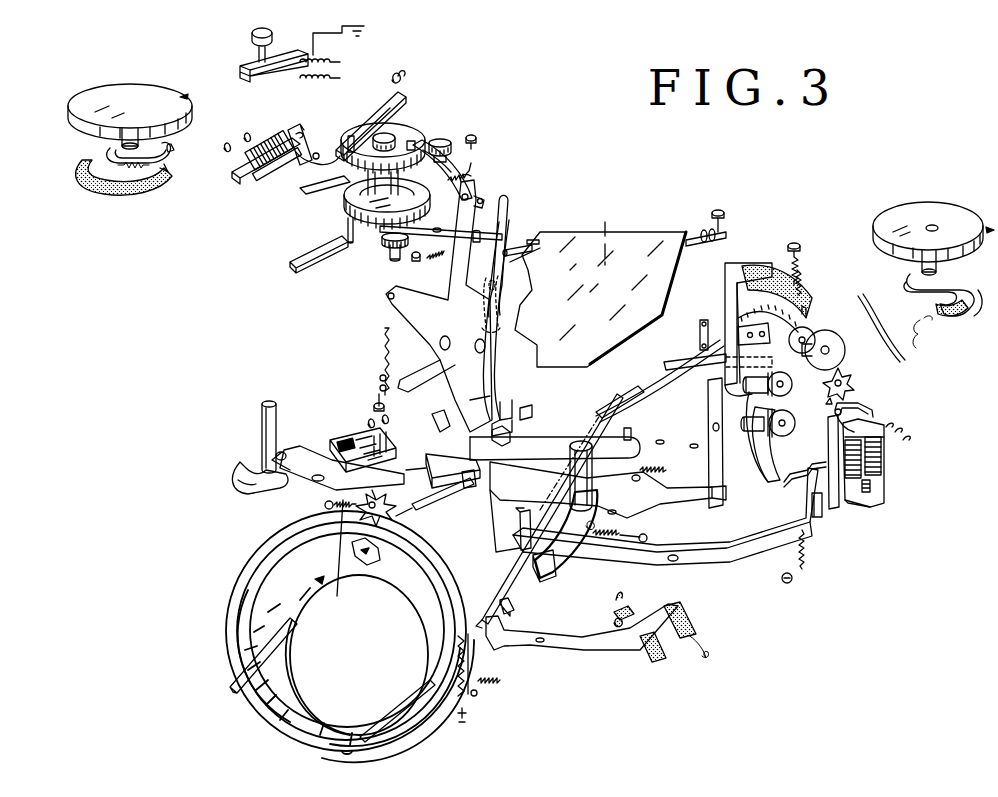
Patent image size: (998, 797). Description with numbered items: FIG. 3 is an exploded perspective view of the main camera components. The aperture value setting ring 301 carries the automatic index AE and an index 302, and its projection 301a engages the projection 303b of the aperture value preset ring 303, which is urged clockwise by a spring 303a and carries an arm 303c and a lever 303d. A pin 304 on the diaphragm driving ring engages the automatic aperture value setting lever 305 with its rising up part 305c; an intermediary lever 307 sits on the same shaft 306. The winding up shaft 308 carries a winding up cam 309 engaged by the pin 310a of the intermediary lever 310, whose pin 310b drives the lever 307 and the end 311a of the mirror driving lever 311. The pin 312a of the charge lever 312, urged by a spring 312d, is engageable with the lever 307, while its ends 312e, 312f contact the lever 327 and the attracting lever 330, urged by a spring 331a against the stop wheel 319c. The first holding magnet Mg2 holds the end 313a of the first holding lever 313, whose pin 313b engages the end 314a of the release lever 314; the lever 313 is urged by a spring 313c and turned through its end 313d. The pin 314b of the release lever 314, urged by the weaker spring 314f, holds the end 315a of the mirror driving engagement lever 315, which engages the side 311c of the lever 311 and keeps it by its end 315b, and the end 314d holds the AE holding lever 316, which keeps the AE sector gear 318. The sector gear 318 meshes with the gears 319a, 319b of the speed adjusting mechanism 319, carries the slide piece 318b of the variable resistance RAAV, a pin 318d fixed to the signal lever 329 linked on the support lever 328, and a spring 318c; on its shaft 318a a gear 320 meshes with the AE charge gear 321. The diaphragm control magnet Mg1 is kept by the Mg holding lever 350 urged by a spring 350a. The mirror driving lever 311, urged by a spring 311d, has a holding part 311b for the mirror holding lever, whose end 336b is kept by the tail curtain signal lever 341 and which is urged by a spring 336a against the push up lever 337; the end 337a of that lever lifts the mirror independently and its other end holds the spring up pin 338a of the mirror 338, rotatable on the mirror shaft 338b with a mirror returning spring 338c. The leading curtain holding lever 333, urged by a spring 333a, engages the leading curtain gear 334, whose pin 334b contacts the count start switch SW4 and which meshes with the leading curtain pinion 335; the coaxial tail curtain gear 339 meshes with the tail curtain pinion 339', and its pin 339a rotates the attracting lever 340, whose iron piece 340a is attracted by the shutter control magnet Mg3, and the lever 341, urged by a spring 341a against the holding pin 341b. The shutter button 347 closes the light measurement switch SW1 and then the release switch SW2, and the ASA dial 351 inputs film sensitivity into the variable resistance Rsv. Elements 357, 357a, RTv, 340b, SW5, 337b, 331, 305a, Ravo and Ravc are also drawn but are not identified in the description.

The film speed dial 357 is at (90, 96).
The dial contact arm 357a is at (172, 160).
The film speed variable resistor RTv is at (102, 190).
The shutter button 347 is at (250, 35).
The light measurement switch SW1 is at (333, 49).
The release switch SW2 is at (333, 80).
The iron piece 340a is at (290, 136).
The shutter control magnet Mg3 is at (256, 186).
The armature link 340b is at (330, 176).
The pin 339a is at (348, 195).
The switch 5 SW5 is at (296, 260).
The count start switch SW4 is at (396, 90).
The leading curtain gear 334 is at (408, 133).
The pin 334b is at (385, 126).
The leading curtain pinion 335 is at (447, 137).
The leading curtain holding lever 333 is at (462, 186).
The spring 333a is at (475, 160).
The attracting lever 340 is at (350, 212).
The tail curtain gear 339 is at (384, 243).
The tail curtain pinion 339' is at (367, 250).
The tail curtain signal lever 341 is at (430, 228).
The spring 341a is at (430, 262).
The holding pin 341b is at (486, 204).
The end of mirror holding lever 336b is at (510, 224).
The mirror driving lever 311 is at (442, 326).
The holding part 311b is at (396, 288).
The spring 311d is at (384, 340).
The end of mirror driving lever 311a is at (380, 384).
The end of push up lever 337a is at (406, 380).
The push up lever 337 is at (498, 366).
The side of mirror driving lever 311c is at (482, 396).
The latch tab 337b is at (510, 412).
The end of mirror driving engagement lever 315b is at (541, 404).
The rising up part 305c is at (506, 432).
The pin 310b is at (446, 426).
The spring 336a is at (512, 296).
The spring up pin 338a is at (534, 256).
The mirror shaft 338b is at (702, 246).
The mirror returning spring 338c is at (722, 232).
The mirror 338 is at (670, 292).
The support lever 328 is at (700, 326).
The signal lever 329 is at (656, 372).
The arm 303c is at (616, 396).
The pin 318d is at (700, 368).
The pin 312a is at (634, 428).
The AE sector gear 318 is at (732, 372).
The AE holding lever 316 is at (708, 426).
The slide piece 318b is at (730, 284).
The variable resistance RAAV is at (772, 262).
The spring 318c is at (804, 270).
The gear 319a is at (815, 334).
The gear 319b is at (846, 349).
The speed adjusting mechanism 319 is at (884, 328).
The stop wheel 319c is at (852, 378).
The gear 320 is at (792, 388).
The AE charge gear 321 is at (790, 432).
The attracting lever 330 is at (874, 404).
The spring 331a is at (872, 414).
The electromagnet coil 331 is at (890, 428).
The diaphragm control magnet Mg1 is at (876, 506).
The charge lever 312 is at (766, 484).
The shaft 318a is at (758, 468).
The end of charge lever 312e is at (804, 480).
The lever 327 is at (810, 505).
The stepped end 312f is at (834, 508).
The ASA dial 351 is at (916, 204).
The variable resistance Rsv is at (958, 324).
The shaft 306 is at (592, 478).
The intermediary lever 307 is at (572, 443).
The automatic aperture value setting lever 305 is at (562, 566).
The release lever 314 is at (648, 506).
The end of release lever 314d is at (710, 500).
The spring 312d is at (664, 466).
The Mg holding lever 350 is at (728, 552).
The spring 350a is at (792, 566).
The spring 305a is at (650, 539).
The winding up shaft 308 is at (276, 418).
The winding up cam 309 is at (246, 492).
The intermediary lever 310 is at (306, 486).
The pin 310a is at (288, 458).
The first holding magnet Mg2 is at (344, 432).
The end of first holding lever 313a is at (376, 404).
The first holding lever 313 is at (376, 509).
The end of first holding lever 313d is at (322, 508).
The pin 313b is at (404, 516).
The spring 313c is at (340, 561).
The mirror driving engagement lever 315 is at (422, 480).
The end of mirror driving engagement lever 315a is at (473, 471).
The end of release lever 314a is at (440, 500).
The spring 314f is at (520, 530).
The pin 314b is at (498, 552).
The aperture value setting ring 301 is at (434, 720).
The projection 301a is at (450, 606).
The index 302 is at (368, 612).
The projection 303b is at (382, 553).
The lever 303d is at (245, 695).
The aperture value preset ring 303 is at (487, 665).
The spring 303a is at (468, 718).
The pin 304 is at (514, 588).
The variable resistor Ravo is at (648, 650).
The variable resistor Ravc is at (696, 628).